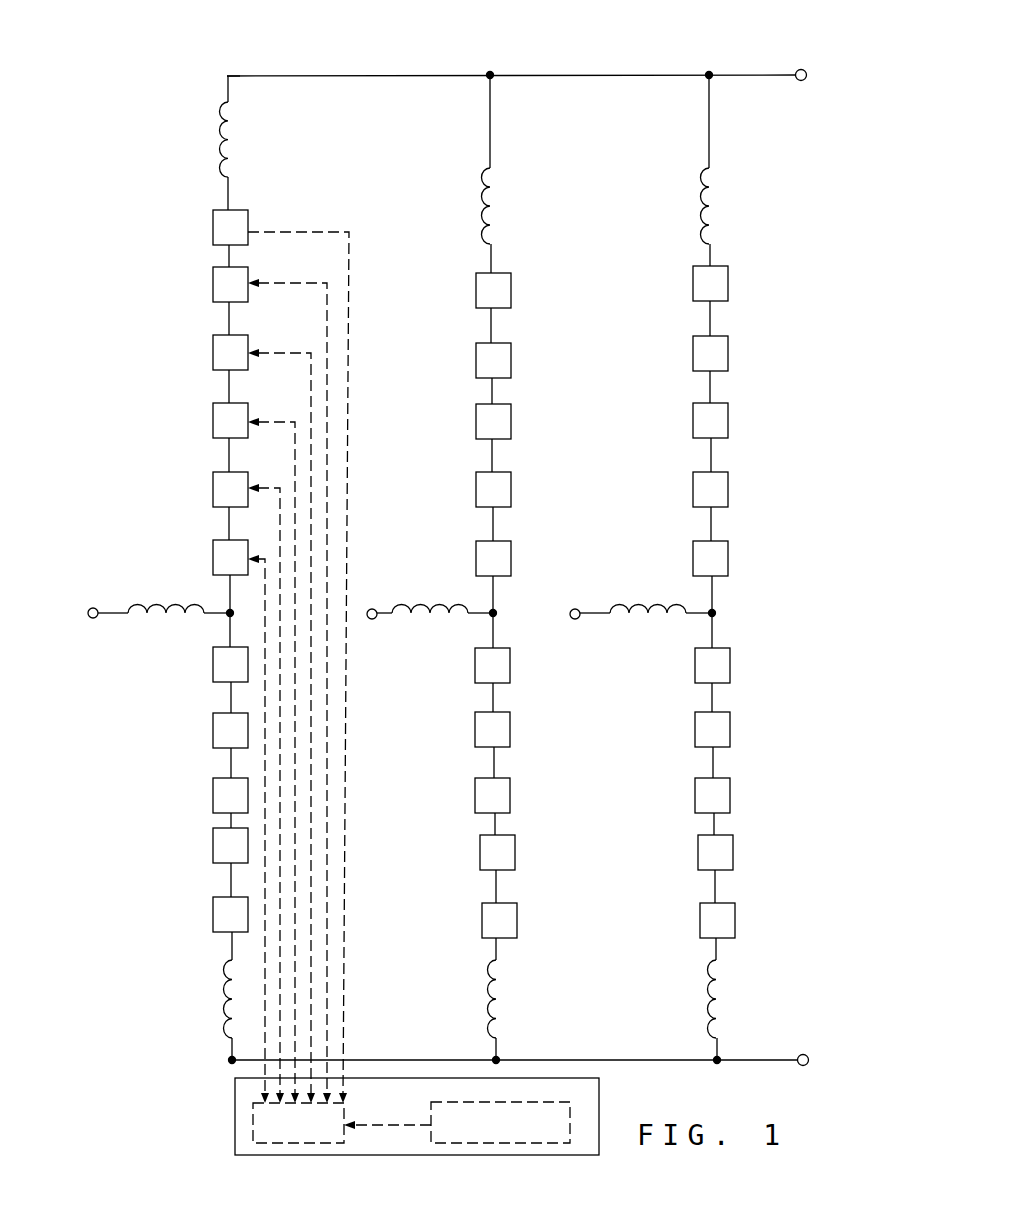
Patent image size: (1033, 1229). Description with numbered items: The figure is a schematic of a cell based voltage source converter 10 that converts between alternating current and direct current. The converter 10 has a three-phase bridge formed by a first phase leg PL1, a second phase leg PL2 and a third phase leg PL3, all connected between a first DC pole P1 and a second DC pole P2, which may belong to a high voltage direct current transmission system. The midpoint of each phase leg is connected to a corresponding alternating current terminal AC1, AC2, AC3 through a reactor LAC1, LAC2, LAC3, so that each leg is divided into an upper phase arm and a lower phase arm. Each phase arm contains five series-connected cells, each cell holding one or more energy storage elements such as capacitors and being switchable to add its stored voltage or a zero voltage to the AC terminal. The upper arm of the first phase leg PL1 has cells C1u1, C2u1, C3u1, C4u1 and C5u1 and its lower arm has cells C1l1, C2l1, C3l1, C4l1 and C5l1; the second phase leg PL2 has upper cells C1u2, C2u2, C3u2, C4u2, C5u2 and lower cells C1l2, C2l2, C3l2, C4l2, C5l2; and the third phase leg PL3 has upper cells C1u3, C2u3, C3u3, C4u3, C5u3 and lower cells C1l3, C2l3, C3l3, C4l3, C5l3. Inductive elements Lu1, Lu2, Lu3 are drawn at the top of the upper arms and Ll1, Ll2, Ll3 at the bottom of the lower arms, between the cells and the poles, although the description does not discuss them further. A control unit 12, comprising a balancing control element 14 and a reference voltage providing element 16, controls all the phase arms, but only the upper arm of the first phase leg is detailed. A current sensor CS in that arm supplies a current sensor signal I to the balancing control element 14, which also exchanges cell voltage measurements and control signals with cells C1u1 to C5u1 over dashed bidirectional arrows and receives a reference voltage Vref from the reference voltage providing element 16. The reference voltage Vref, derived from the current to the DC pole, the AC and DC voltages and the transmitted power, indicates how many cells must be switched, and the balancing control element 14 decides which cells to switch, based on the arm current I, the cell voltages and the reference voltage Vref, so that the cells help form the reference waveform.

The cell based voltage source converter 10 is at (176, 79).
The control unit 12 is at (235, 1128).
The balancing control element 14 is at (298, 1123).
The reference voltage providing element 16 is at (500, 1122).
The first DC pole P1 is at (784, 60).
The second DC pole P2 is at (783, 1080).
The first phase leg PL1 is at (223, 58).
The second phase leg PL2 is at (487, 61).
The third phase leg PL3 is at (709, 61).
The alternating current terminal AC1 is at (82, 626).
The alternating current terminal AC2 is at (394, 597).
The alternating current terminal AC3 is at (565, 600).
The reactor LAC1 is at (179, 626).
The reactor LAC2 is at (442, 626).
The reactor LAC3 is at (661, 626).
The upper arm inductor 1 Lu1 is at (188, 139).
The upper arm inductor 2 Lu2 is at (454, 206).
The upper arm inductor 3 Lu3 is at (675, 206).
The lower arm inductor 1 Ll1 is at (198, 999).
The lower arm inductor 2 Ll2 is at (460, 999).
The lower arm inductor 3 Ll3 is at (679, 999).
The current sensor CS is at (200, 228).
The current sensor signal I is at (298, 649).
The reference voltage Vref is at (387, 1110).
The cell C1u1 is at (190, 285).
The cell C2u1 is at (190, 353).
The cell C3u1 is at (190, 421).
The cell C4u1 is at (190, 490).
The cell C5u1 is at (190, 558).
The cell C1l1 is at (190, 665).
The cell C2l1 is at (190, 731).
The cell C3l1 is at (190, 797).
The cell C4l1 is at (190, 847).
The cell C5l1 is at (190, 917).
The cell C1u2 is at (453, 291).
The cell C2u2 is at (453, 361).
The cell C3u2 is at (453, 422).
The cell C4u2 is at (453, 490).
The cell C5u2 is at (453, 558).
The cell C1l2 is at (453, 666).
The cell C2l2 is at (453, 730).
The cell C3l2 is at (453, 796).
The cell C4l2 is at (457, 852).
The cell C5l2 is at (459, 920).
The cell C1u3 is at (670, 285).
The cell C2u3 is at (670, 354).
The cell C3u3 is at (670, 420).
The cell C4u3 is at (672, 489).
The cell C5u3 is at (674, 558).
The cell C1l3 is at (672, 665).
The cell C2l3 is at (672, 729).
The cell C3l3 is at (672, 796).
The cell C4l3 is at (675, 852).
The cell C5l3 is at (677, 920).